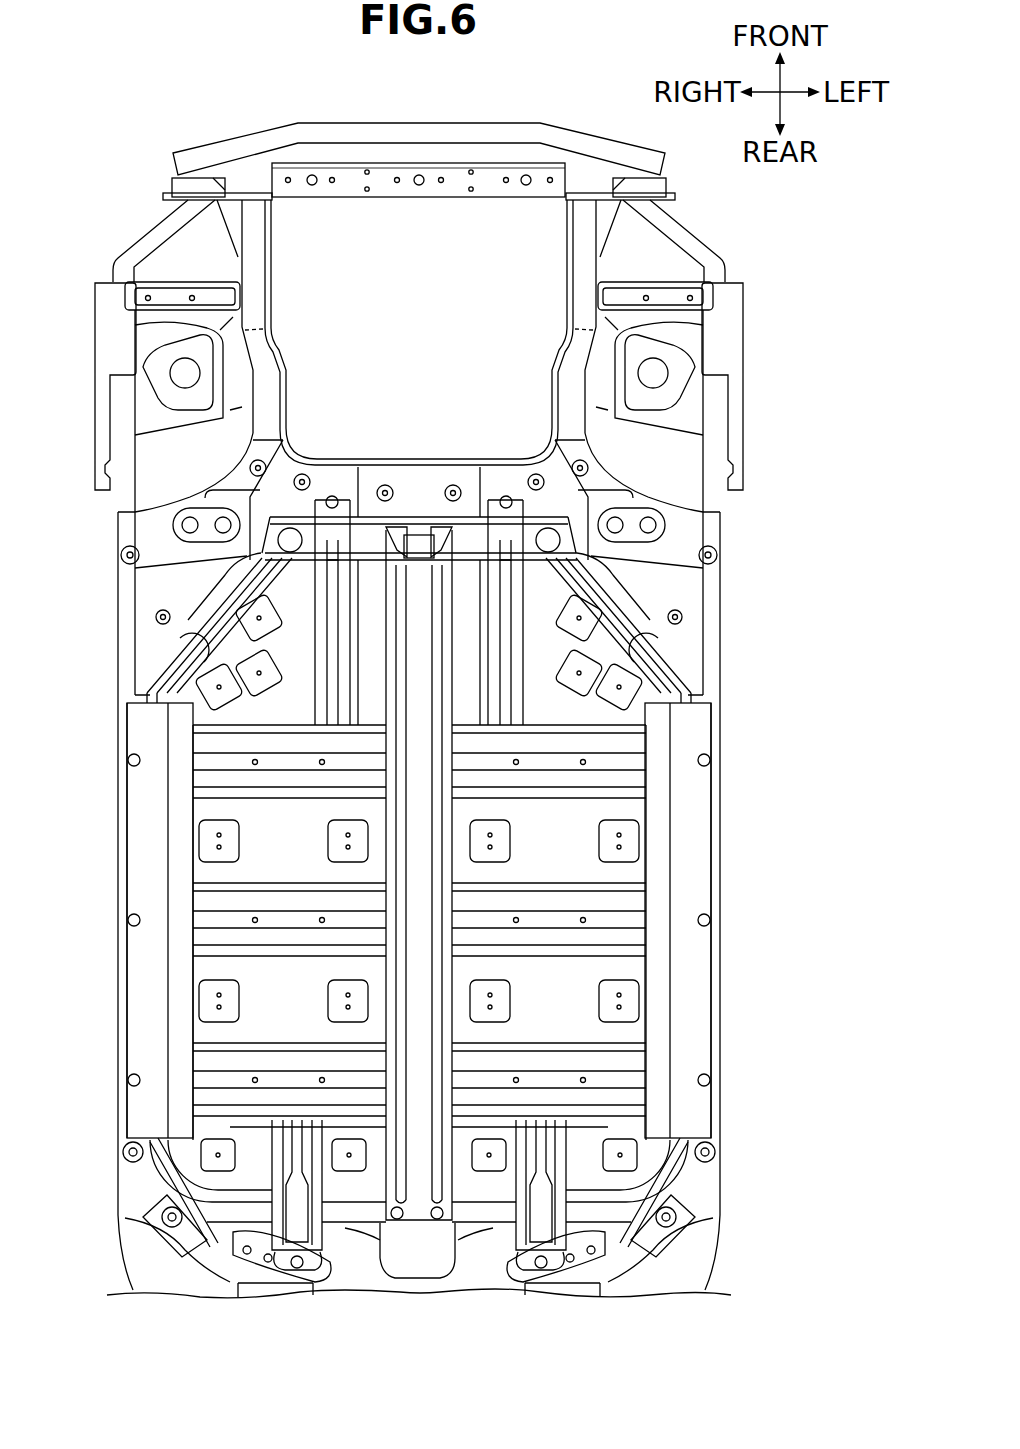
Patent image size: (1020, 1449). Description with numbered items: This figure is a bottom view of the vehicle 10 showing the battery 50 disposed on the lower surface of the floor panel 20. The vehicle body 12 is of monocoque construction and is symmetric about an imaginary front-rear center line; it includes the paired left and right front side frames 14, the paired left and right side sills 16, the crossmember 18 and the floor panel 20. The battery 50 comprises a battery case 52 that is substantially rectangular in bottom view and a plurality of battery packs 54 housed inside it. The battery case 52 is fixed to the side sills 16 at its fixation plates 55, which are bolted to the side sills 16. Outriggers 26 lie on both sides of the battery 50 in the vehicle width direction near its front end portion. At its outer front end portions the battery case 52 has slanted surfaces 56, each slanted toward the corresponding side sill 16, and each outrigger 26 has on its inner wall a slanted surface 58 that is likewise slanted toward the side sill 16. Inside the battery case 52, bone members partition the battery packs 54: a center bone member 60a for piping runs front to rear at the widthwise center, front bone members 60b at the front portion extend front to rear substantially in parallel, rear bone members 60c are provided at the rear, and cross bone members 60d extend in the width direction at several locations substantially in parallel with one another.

The vehicle 10 is at (195, 106).
The vehicle body 12 is at (728, 685).
The front side frame 14 is at (270, 290).
The side sill 16 is at (113, 921).
The crossmember 18 is at (414, 456).
The floor panel 20 is at (608, 480).
The outrigger 26 is at (134, 617).
The battery 50 is at (577, 834).
The battery case 52 is at (367, 548).
The battery pack 54 is at (240, 697).
The fixation plate 55 is at (150, 1032).
The slanted surface 56 is at (133, 567).
The slanted surface 58 is at (197, 660).
The center bone member 60a is at (418, 1190).
The front bone member 60b is at (312, 617).
The rear bone member 60c is at (327, 1235).
The cross bone member 60d is at (235, 800).